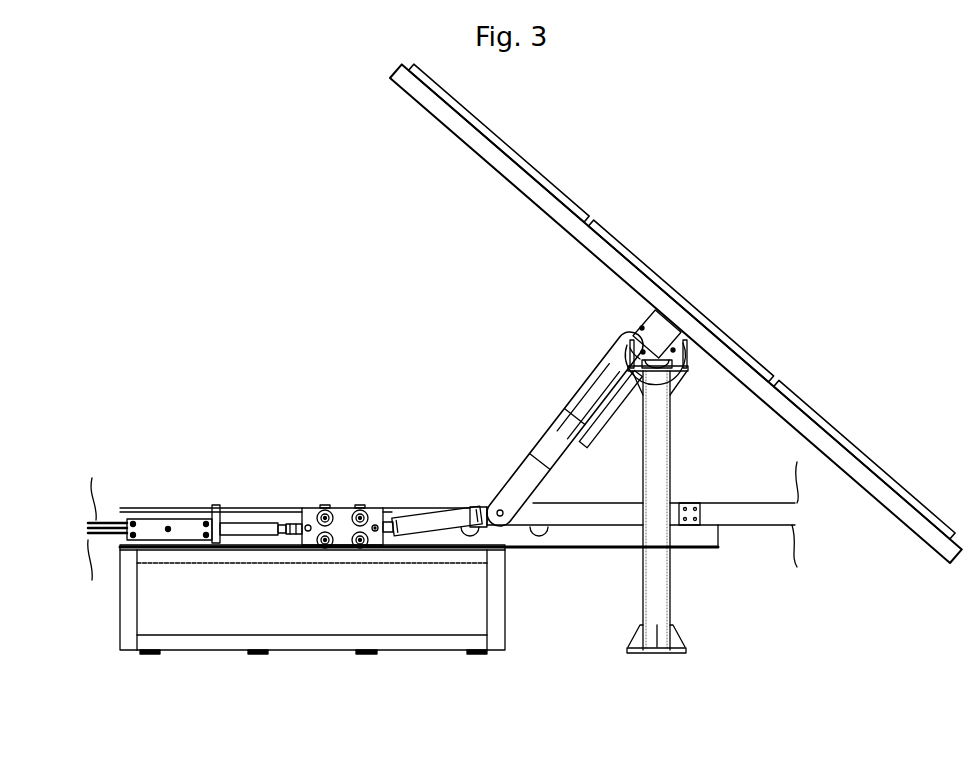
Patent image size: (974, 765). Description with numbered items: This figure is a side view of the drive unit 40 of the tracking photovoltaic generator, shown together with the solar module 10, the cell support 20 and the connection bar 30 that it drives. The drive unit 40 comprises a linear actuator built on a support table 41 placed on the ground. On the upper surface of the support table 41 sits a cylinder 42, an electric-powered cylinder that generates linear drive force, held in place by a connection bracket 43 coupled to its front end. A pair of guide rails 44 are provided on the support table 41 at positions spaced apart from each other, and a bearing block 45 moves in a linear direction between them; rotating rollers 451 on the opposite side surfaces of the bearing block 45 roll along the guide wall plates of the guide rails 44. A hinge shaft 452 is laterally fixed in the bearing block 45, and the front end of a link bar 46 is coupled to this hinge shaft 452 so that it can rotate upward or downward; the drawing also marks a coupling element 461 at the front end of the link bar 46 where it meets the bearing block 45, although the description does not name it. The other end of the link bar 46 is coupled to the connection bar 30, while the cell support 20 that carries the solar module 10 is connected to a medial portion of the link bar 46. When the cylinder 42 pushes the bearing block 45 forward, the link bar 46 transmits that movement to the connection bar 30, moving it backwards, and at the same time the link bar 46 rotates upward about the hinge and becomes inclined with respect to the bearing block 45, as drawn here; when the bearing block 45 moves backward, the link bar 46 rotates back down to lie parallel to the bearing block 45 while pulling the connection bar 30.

The solar module 10 is at (658, 268).
The cell support 20 is at (570, 361).
The connection bar 30 is at (740, 512).
The drive unit 40 is at (377, 466).
The support table 41 is at (215, 644).
The cylinder 42 is at (110, 519).
The connection bracket 43 is at (185, 520).
The guide rail 44 is at (260, 510).
The bearing block 45 is at (362, 566).
The rotating roller 451 is at (333, 550).
The hinge shaft 452 is at (368, 548).
The link bar 46 is at (434, 520).
The connecting pin 461 is at (380, 548).